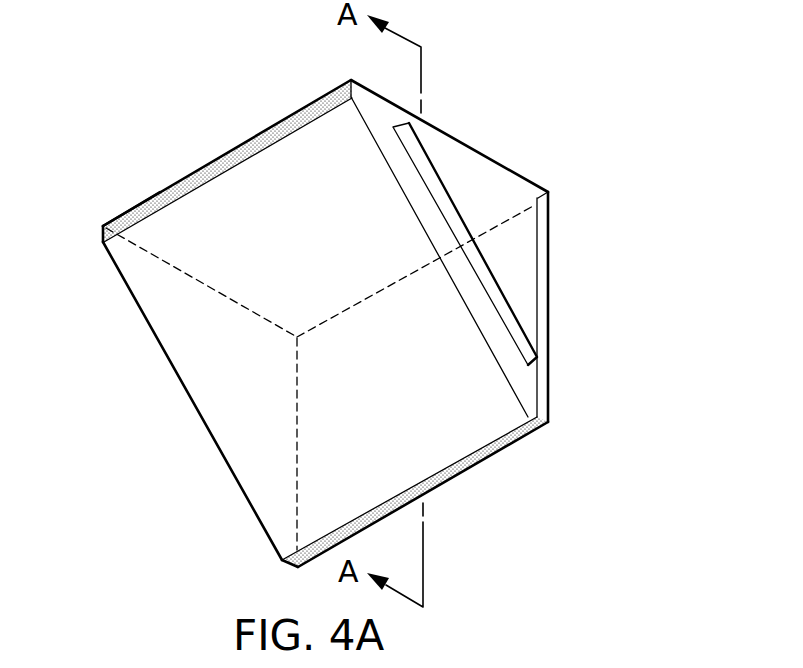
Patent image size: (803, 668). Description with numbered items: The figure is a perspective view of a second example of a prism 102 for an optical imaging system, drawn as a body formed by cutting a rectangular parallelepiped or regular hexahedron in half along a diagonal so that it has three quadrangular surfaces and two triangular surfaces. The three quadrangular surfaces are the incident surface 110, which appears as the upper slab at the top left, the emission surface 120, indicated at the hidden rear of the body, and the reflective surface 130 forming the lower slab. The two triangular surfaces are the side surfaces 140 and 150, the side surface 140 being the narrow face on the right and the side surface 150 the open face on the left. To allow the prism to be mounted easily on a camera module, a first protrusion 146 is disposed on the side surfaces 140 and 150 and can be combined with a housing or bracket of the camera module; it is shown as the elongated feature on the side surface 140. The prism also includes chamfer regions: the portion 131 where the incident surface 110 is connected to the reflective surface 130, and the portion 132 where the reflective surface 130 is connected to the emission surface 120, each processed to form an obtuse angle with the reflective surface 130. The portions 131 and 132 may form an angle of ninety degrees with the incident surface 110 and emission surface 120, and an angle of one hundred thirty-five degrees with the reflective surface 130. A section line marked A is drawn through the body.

The holder body 102 is at (353, 294).
The incident surface 110 is at (273, 182).
The emission surface 120 is at (533, 375).
The reflective surface 130 is at (253, 445).
The portion connecting incident surface to reflective surface 131 is at (158, 202).
The portion connecting reflective surface to emission surface 132 is at (430, 493).
The side surface 140 is at (543, 275).
The first protrusion 146 is at (520, 243).
The side surface 150 is at (203, 379).